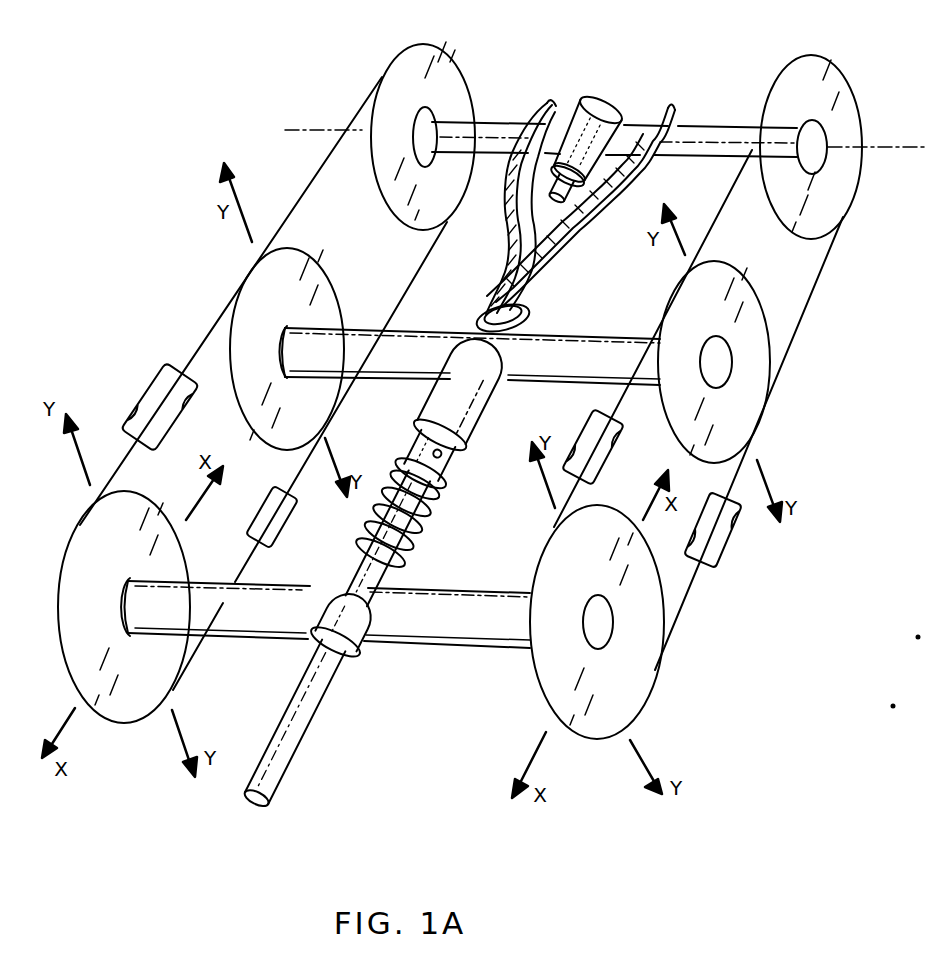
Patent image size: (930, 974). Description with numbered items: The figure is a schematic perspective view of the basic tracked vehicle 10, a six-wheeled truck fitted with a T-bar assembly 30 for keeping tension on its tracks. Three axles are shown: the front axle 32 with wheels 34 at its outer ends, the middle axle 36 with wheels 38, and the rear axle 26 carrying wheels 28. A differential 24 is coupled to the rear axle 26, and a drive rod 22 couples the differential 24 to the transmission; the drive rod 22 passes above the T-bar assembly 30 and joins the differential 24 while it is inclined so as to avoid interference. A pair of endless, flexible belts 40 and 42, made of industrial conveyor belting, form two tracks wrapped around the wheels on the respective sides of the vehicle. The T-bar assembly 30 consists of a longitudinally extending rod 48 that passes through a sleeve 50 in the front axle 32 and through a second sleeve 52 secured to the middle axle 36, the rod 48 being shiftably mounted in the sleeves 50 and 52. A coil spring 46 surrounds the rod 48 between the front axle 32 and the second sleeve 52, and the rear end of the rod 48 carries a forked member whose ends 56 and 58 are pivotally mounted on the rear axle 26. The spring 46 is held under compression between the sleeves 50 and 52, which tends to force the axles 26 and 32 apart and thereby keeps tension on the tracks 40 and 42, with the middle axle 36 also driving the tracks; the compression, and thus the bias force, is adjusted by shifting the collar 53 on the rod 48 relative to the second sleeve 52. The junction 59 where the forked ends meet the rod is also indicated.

The vehicle 10 is at (328, 62).
The drive rod 22 is at (568, 198).
The differential 24 is at (606, 100).
The rear axle 26 is at (704, 147).
The wheels 28 is at (455, 78).
The T-bar assembly 30 is at (376, 575).
The front axle 32 is at (437, 620).
The wheels 34 is at (92, 545).
The middle axle 36 is at (572, 348).
The wheels 38 is at (257, 300).
The endless flexible belt 40 is at (153, 390).
The endless flexible belt 42 is at (610, 452).
The coil spring 46 is at (412, 547).
The rod 48 is at (278, 760).
The sleeve 50 is at (364, 650).
The second sleeve 52 is at (464, 434).
The collar 53 is at (431, 442).
The forked member end 56 is at (548, 104).
The forked member end 58 is at (671, 106).
The fork collar 59 is at (502, 270).